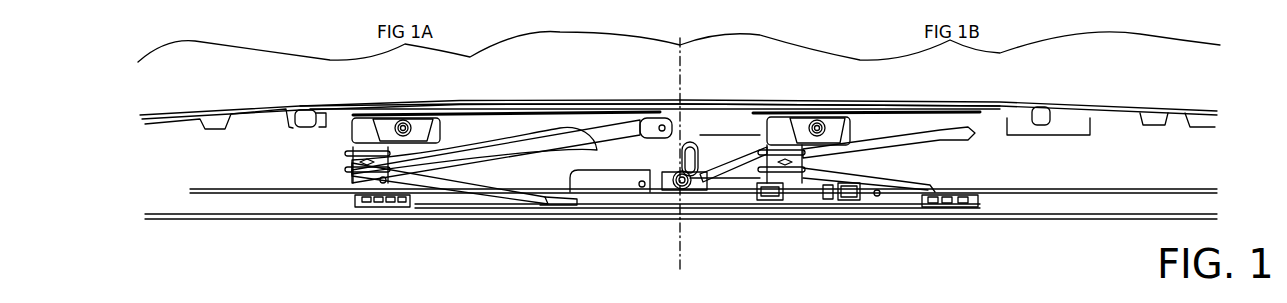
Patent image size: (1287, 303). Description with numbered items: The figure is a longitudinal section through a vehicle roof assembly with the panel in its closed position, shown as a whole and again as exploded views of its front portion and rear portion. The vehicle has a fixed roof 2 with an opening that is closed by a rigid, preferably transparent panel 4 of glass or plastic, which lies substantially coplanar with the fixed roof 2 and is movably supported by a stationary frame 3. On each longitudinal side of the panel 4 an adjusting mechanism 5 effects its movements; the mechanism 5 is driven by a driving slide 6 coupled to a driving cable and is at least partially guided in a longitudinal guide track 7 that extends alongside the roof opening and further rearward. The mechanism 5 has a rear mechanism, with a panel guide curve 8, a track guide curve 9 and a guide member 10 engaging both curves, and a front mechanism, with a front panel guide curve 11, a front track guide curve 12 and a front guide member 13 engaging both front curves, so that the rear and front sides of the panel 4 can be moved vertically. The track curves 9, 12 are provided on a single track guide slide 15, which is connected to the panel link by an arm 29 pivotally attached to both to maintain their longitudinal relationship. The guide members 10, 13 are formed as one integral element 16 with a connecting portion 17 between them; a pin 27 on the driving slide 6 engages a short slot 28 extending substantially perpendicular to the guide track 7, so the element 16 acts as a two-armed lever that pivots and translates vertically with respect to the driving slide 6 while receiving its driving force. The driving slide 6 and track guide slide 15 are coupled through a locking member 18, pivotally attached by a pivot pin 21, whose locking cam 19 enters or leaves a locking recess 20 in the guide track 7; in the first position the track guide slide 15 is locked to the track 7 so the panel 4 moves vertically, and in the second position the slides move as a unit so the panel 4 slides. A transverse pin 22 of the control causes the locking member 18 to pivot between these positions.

In FIG. 1B, the fixed roof 2 is at (1108, 105).
In FIG. 1, the frame 3 is at (1140, 230).
In FIG. 1B, the panel 4 is at (818, 103).
In FIG. 1A, the adjusting mechanism 5 is at (626, 232).
In FIG. 1A, the driving slide 6 is at (677, 137).
In FIG. 1B, the longitudinal guide track 7 is at (1108, 193).
In FIG. 1B, the panel guide curve 8 is at (933, 130).
In FIG. 1B, the track guide curve 9 is at (885, 182).
In FIG. 1B, the guide member 10 is at (793, 167).
In FIG. 1A, the front panel guide curve 11 is at (517, 137).
In FIG. 1A, the front track guide curve 12 is at (475, 185).
In FIG. 1A, the front guide member 13 is at (363, 163).
In FIG. 1B, the front guide member 13 is at (728, 132).
In FIG. 1A, the track guide slide 15 is at (588, 183).
In FIG. 1A, the integral element 16 is at (625, 145).
In FIG. 1B, the connecting portion 17 is at (752, 155).
In FIG. 1B, the locking member 18 is at (833, 187).
In FIG. 1B, the locking cam 19 is at (852, 191).
In FIG. 1B, the locking recess 20 is at (858, 191).
In FIG. 1B, the pivot pin 21 is at (698, 185).
In FIG. 1A, the pin 22 is at (662, 185).
In FIG. 1B, the pin 27 is at (686, 185).
In FIG. 1B, the short slot 28 is at (702, 142).
In FIG. 1A, the arm 29 is at (598, 137).